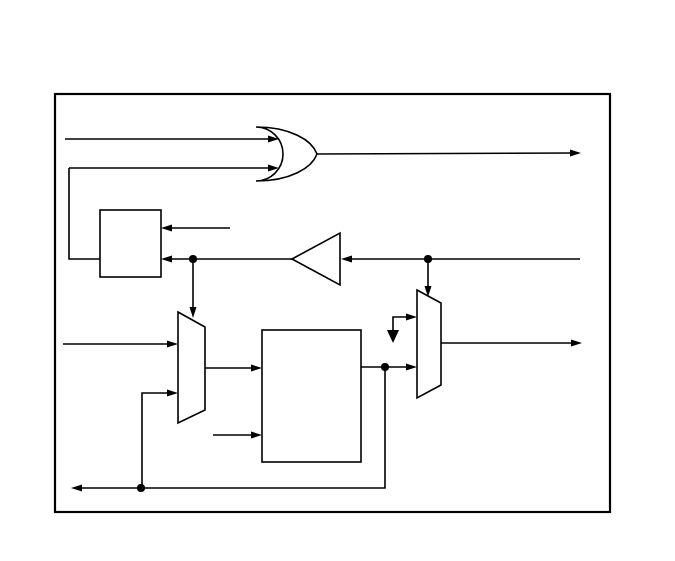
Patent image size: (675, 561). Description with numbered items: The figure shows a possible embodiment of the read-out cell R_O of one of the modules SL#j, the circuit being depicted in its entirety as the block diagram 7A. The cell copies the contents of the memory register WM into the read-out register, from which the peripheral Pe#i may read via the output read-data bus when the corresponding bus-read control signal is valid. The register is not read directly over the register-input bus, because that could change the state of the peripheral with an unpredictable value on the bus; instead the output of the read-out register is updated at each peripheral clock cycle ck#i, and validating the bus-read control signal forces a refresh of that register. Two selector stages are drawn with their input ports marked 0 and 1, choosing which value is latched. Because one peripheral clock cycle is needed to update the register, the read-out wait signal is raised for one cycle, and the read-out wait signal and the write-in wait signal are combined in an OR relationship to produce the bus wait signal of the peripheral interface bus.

The multiplexer input 0 port 0 is at (250, 333).
The multiplexer input 1 port 1 is at (290, 425).
The bus read/wait control circuit of FIG. 7A is at (332, 326).